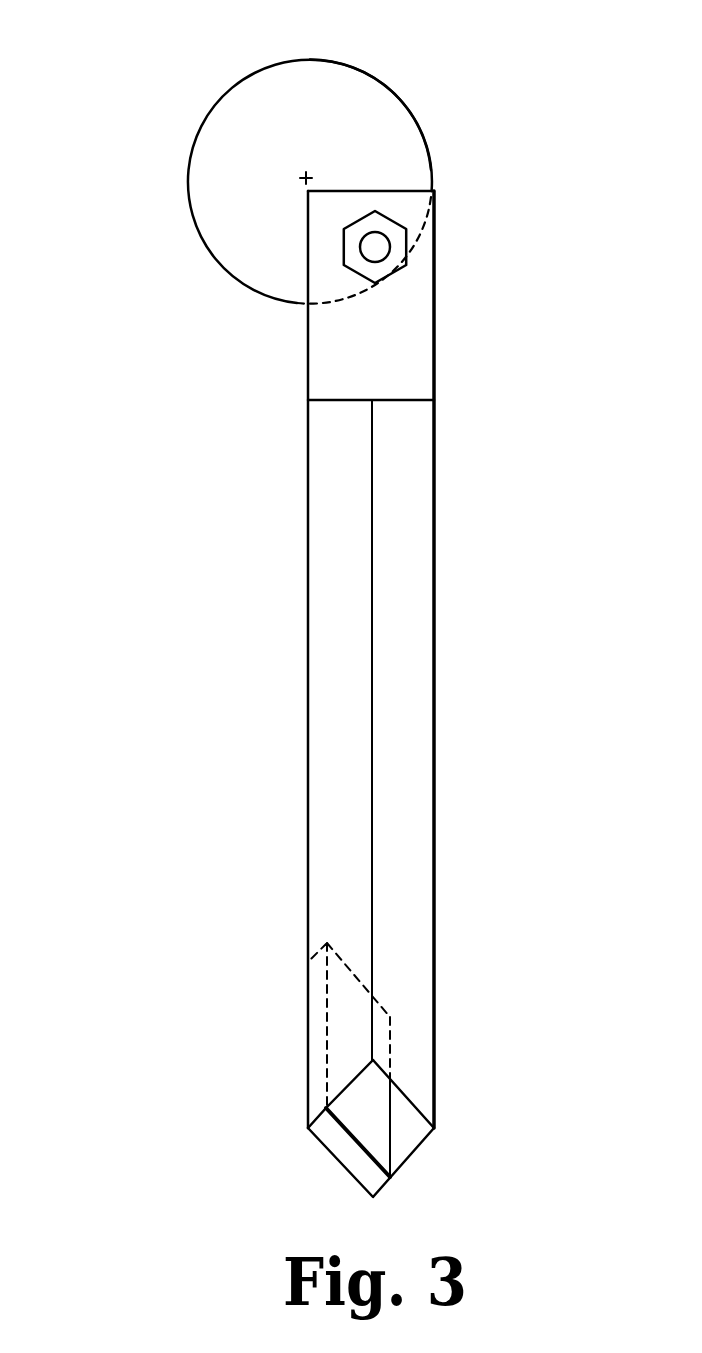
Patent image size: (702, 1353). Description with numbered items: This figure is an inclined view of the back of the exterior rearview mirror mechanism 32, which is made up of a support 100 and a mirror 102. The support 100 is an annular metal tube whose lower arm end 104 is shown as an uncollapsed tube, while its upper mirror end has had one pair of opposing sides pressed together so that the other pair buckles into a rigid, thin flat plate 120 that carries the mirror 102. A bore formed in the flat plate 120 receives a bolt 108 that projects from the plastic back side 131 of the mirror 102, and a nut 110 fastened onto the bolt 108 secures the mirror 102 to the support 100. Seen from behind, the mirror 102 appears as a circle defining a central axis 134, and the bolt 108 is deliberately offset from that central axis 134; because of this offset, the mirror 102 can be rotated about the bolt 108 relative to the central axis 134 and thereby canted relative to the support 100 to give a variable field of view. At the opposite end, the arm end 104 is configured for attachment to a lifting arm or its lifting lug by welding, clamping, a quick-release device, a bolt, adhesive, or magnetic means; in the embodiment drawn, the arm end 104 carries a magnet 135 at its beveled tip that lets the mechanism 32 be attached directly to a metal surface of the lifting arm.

The exterior rearview mirror mechanism 32 is at (237, 653).
The support 100 is at (437, 779).
The mirror 102 is at (373, 64).
The arm end 104 is at (436, 1128).
The bolt 108 is at (380, 245).
The nut 110 is at (352, 250).
The flat plate 120 is at (418, 352).
The back side 131 is at (197, 181).
The central axis 134 is at (312, 176).
The magnet 135 is at (341, 1146).